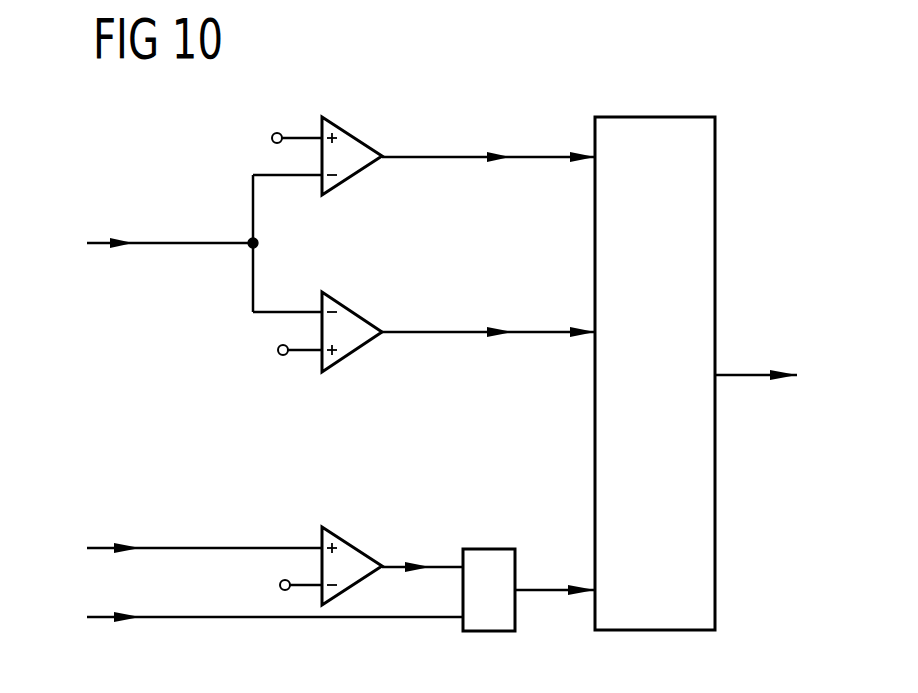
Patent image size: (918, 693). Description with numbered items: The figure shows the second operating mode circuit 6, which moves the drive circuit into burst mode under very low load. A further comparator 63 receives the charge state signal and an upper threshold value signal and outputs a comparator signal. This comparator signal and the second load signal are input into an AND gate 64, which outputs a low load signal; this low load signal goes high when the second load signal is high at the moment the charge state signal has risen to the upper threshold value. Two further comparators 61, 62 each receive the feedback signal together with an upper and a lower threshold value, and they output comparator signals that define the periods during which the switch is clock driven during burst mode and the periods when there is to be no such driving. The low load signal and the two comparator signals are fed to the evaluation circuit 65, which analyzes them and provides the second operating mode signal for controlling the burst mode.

The second operating mode circuit 6 is at (768, 122).
The comparator 61 is at (350, 130).
The comparator 62 is at (350, 304).
The further comparator 63 is at (350, 539).
The AND gate 64 is at (489, 549).
The evaluation circuit 65 is at (640, 117).